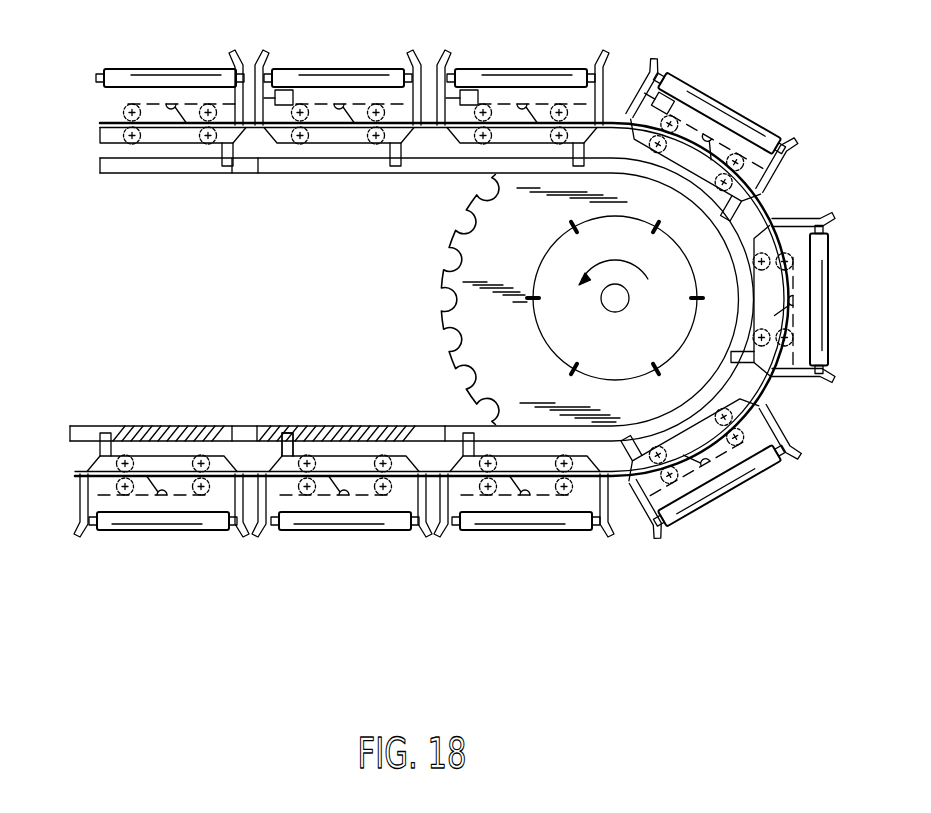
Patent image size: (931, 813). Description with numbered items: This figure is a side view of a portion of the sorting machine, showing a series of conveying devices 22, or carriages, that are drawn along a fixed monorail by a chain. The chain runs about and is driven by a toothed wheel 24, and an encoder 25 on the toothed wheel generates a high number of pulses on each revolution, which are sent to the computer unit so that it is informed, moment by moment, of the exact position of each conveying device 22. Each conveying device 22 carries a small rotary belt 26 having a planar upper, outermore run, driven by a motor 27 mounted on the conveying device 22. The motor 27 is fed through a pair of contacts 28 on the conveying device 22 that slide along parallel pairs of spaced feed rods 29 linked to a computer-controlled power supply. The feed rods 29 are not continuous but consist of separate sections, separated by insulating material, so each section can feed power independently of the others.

The conveying device 22 is at (786, 122).
The toothed wheel 24 is at (480, 237).
The encoder 25 is at (616, 312).
The rotary belt 26 is at (372, 72).
The motor 27 is at (290, 92).
The contacts 28 is at (286, 432).
The feed rods 29 is at (266, 430).